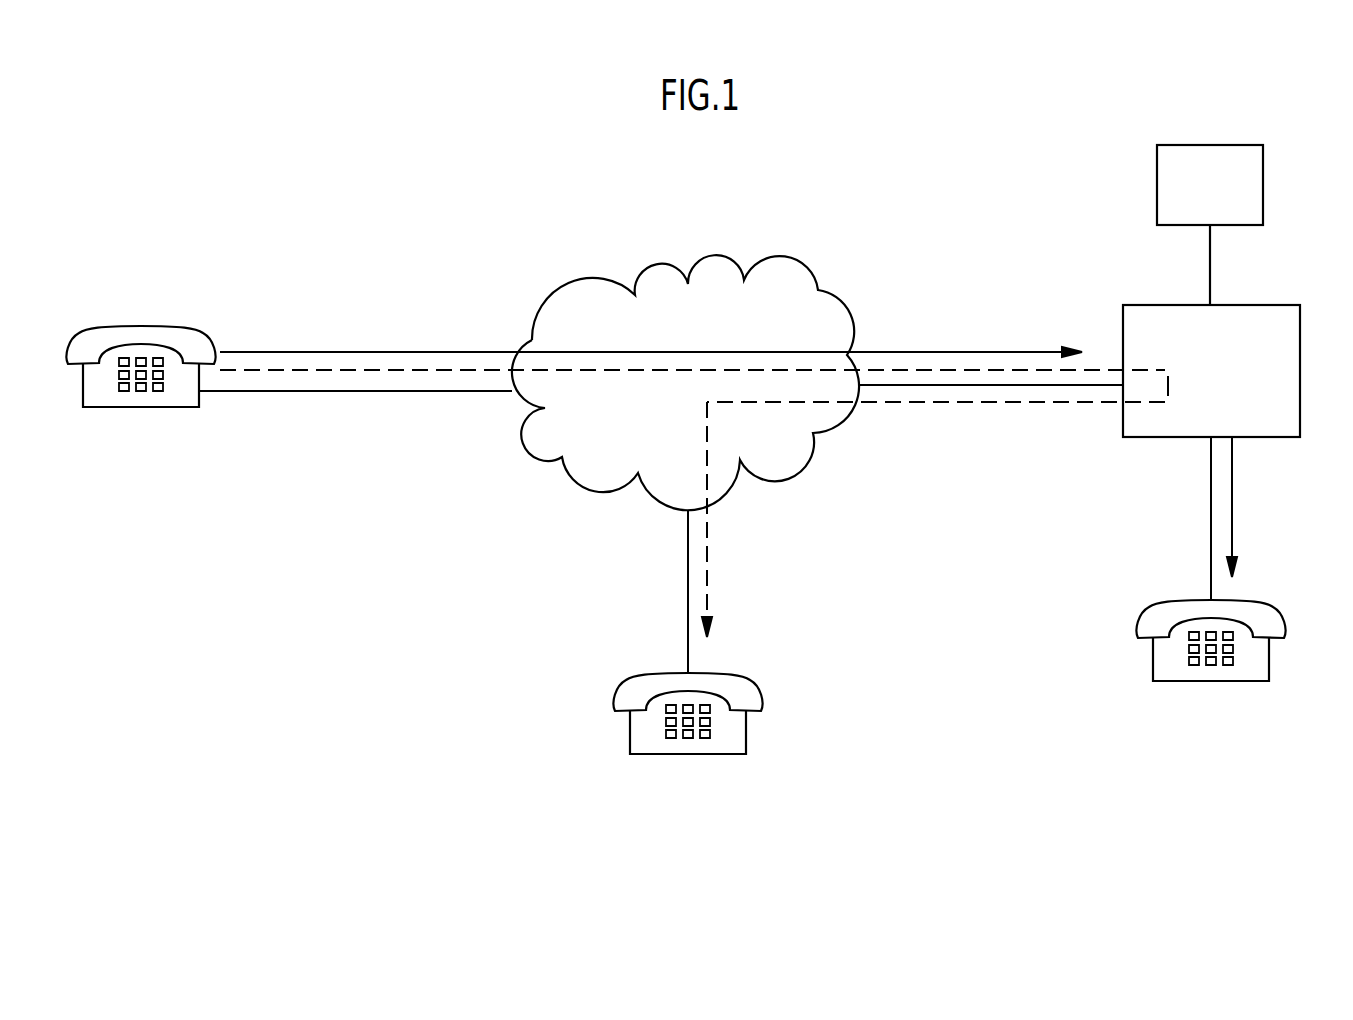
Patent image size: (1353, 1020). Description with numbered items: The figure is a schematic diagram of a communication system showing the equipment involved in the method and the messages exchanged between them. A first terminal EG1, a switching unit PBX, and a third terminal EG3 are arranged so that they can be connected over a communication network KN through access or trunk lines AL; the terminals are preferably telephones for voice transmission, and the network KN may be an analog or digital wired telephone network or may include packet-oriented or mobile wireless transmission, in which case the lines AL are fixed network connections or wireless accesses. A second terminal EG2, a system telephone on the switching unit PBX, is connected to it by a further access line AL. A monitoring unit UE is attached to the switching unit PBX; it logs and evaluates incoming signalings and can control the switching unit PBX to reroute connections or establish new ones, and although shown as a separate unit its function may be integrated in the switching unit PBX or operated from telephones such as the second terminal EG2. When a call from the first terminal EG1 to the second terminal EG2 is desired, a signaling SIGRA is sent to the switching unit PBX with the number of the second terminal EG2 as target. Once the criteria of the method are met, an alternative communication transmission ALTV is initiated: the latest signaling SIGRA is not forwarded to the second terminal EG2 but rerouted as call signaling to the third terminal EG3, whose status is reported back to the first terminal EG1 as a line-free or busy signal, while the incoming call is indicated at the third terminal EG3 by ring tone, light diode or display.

The first terminal EG1 is at (140, 387).
The second terminal EG2 is at (1210, 664).
The third terminal EG3 is at (687, 734).
The communication network KN is at (685, 382).
The monitoring unit UE is at (1210, 185).
The switching unit PBX is at (1211, 331).
The access or trunk lines AL is at (380, 391).
The alternative communication transmission ALTV is at (946, 370).
The signaling SIGRA is at (1267, 498).